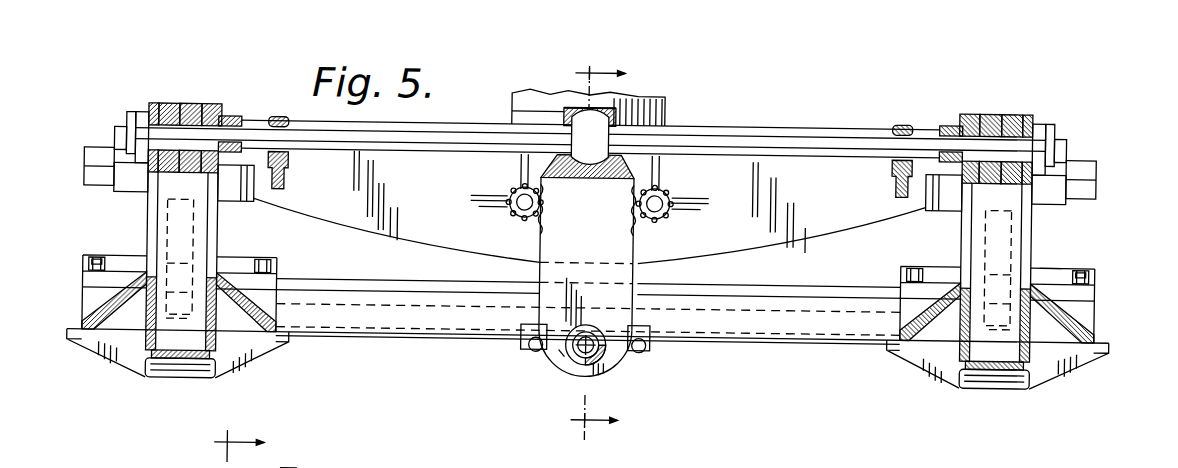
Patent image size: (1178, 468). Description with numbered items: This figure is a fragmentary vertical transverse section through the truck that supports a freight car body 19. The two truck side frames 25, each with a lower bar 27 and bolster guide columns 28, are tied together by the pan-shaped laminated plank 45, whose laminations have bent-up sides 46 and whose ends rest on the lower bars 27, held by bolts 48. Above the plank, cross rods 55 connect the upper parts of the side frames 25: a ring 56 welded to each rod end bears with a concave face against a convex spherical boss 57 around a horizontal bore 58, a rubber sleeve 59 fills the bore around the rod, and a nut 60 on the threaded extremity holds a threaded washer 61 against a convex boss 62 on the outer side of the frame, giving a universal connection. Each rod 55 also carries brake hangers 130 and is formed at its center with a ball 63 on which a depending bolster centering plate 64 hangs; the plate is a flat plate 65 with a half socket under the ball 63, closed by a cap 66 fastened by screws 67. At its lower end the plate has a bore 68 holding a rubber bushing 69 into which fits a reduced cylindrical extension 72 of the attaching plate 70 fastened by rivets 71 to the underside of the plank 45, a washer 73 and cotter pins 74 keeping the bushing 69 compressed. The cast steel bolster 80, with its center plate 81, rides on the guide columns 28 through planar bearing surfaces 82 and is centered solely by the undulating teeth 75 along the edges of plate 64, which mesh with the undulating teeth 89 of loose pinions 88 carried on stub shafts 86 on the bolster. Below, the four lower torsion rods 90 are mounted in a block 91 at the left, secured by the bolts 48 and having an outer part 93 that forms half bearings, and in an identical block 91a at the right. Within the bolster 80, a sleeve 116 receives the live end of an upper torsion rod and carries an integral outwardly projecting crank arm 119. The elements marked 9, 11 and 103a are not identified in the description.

The cross rod 55 is at (792, 116).
The nut 60 is at (125, 119).
The threaded washer 61 is at (140, 118).
The convex boss 62 is at (153, 109).
The rubber sleeve 59 is at (180, 109).
The horizontal bore 58 is at (202, 109).
The convex spherical boss 57 is at (228, 118).
The ring 56 is at (233, 122).
The brake hangers 130 is at (287, 178).
The sleeve 116 is at (97, 153).
The bolster guide columns 28 is at (152, 218).
The flat bearing surfaces 82 is at (233, 200).
The lower bar 27 is at (167, 383).
The truck side frames 25 is at (120, 380).
The outer part 93 is at (83, 314).
The bolts 48 is at (90, 262).
The block 91 is at (259, 254).
The block 91a is at (893, 269).
The plate 103a is at (1050, 260).
The lower torsion rods 90 is at (390, 270).
The bolster 80 is at (782, 214).
The laminated plank 45 is at (357, 340).
The bent-up sides 46 is at (837, 305).
The section line 9 is at (236, 437).
The crank arm 119 is at (268, 462).
The section line 11 is at (586, 255).
The freight car body 19 is at (667, 98).
The center plate 81 is at (663, 118).
The cap 66 is at (610, 116).
The screws 67 is at (603, 110).
The bolster centering plate 64 is at (586, 265).
The flat plate 65 is at (628, 243).
The ball 63 is at (590, 136).
The teeth 75 is at (540, 243).
The teeth 89 is at (523, 183).
The stub shaft 86 is at (507, 197).
The pinion 88 is at (512, 213).
The rivets 71 is at (523, 352).
The attaching plate 70 is at (651, 340).
The cylindrical extensions 72 is at (600, 368).
The cotter pins 74 is at (578, 352).
The washer 73 is at (585, 362).
The bushing 69 is at (612, 365).
The bores 68 is at (560, 350).